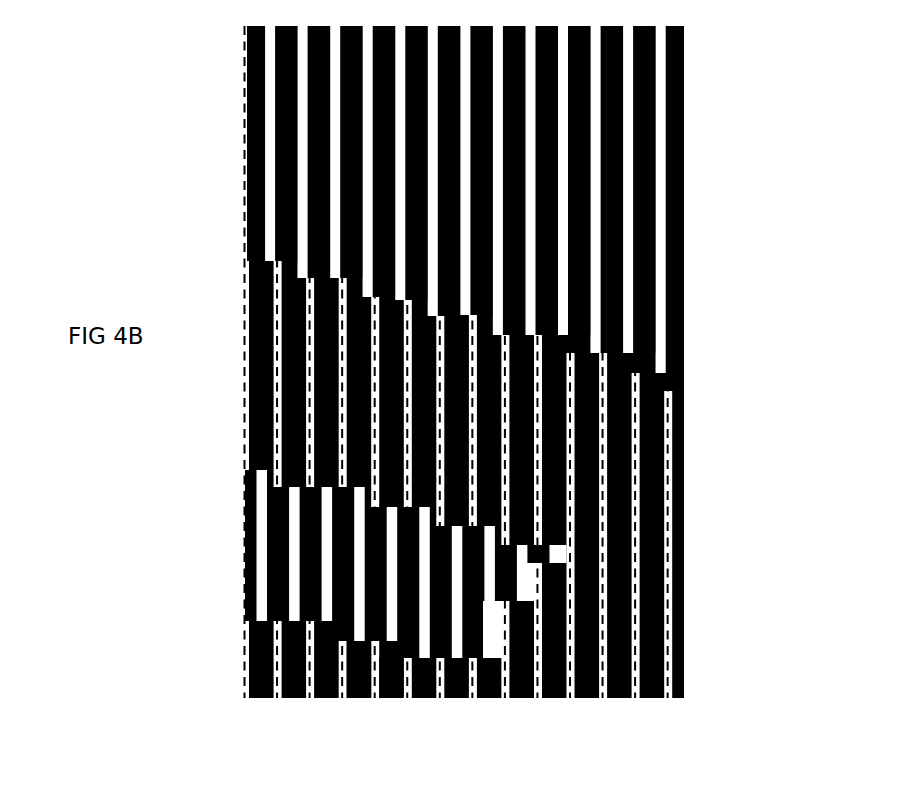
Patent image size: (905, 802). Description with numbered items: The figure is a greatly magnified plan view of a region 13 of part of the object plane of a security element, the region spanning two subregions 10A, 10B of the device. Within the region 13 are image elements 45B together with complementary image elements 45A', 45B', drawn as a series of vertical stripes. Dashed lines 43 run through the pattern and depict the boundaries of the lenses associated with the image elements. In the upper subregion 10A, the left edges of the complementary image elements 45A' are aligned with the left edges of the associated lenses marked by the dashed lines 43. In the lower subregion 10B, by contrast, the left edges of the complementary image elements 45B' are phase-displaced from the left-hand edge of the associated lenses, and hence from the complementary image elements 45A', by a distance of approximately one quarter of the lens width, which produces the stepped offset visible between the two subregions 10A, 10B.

The region 13 is at (440, 397).
The subregion 10A is at (722, 164).
The subregion 10B is at (720, 535).
The dashed lines 43 is at (302, 688).
The complementary image elements 45A' is at (226, 136).
The image elements 45B is at (422, 398).
The complementary image elements 45B' is at (375, 703).